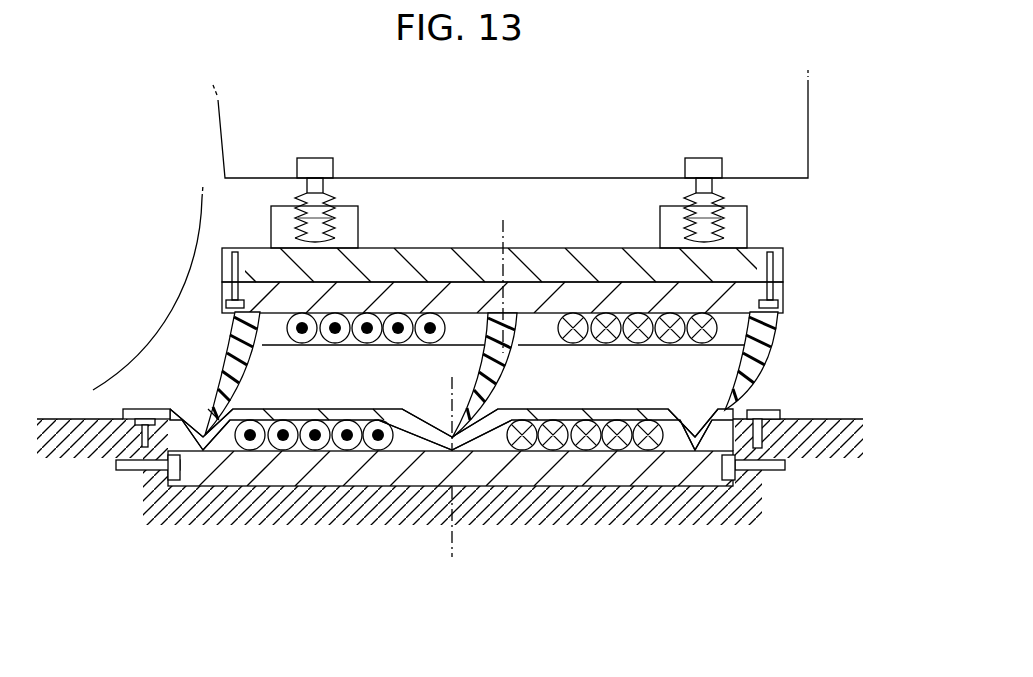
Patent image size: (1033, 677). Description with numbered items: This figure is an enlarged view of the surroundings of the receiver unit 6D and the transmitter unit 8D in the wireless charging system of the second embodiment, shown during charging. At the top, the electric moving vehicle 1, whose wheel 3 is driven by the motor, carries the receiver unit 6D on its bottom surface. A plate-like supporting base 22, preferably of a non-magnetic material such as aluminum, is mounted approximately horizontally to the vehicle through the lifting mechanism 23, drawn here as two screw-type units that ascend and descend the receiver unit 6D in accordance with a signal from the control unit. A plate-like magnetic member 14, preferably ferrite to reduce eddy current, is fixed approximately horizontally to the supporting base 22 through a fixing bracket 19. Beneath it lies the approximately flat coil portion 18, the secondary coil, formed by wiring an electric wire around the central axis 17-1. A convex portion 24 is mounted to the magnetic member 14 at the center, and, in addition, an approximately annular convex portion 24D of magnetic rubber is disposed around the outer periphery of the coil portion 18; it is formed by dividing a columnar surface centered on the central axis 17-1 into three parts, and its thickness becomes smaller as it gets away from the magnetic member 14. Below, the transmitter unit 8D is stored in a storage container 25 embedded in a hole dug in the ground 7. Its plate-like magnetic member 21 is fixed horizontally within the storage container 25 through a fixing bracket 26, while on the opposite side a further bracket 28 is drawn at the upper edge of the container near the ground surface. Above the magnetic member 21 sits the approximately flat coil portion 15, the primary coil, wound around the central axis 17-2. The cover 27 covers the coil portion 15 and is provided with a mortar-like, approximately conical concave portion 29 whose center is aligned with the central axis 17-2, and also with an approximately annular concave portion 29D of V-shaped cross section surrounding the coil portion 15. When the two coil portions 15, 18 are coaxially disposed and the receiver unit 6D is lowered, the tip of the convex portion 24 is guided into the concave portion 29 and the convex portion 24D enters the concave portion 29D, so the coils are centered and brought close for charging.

The electric moving vehicle 1 is at (808, 125).
The wheel 3 is at (185, 288).
The receiver unit 6D is at (564, 260).
The ground 7 is at (827, 427).
The transmitter unit 8D is at (674, 532).
The magnetic member 14 is at (412, 290).
The coil portion (primary coil) 15 is at (345, 417).
The central axis 17-1 is at (507, 240).
The central axis 17-2 is at (454, 543).
The coil portion (secondary coil) 18 is at (302, 342).
The fixing bracket 19 is at (782, 255).
The magnetic member 21 is at (315, 476).
The supporting base 22 is at (473, 263).
The lifting mechanism 23 is at (318, 142).
The convex portion 24 is at (493, 390).
The convex portion 24D is at (237, 363).
The storage container 25 is at (733, 438).
The fixing bracket 26 is at (125, 471).
The cover 27 is at (587, 413).
The mounting bracket 28 is at (757, 410).
The concave portion 29 is at (430, 422).
The concave portion 29D is at (195, 420).